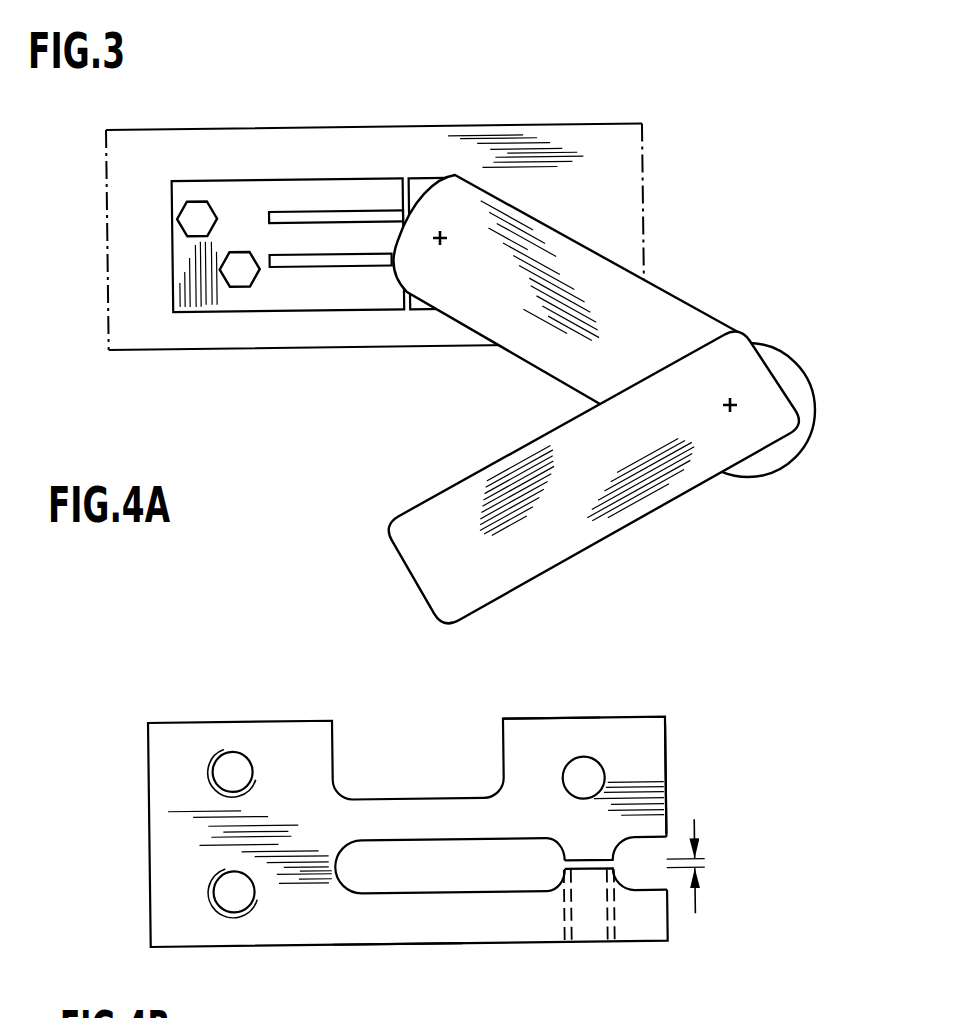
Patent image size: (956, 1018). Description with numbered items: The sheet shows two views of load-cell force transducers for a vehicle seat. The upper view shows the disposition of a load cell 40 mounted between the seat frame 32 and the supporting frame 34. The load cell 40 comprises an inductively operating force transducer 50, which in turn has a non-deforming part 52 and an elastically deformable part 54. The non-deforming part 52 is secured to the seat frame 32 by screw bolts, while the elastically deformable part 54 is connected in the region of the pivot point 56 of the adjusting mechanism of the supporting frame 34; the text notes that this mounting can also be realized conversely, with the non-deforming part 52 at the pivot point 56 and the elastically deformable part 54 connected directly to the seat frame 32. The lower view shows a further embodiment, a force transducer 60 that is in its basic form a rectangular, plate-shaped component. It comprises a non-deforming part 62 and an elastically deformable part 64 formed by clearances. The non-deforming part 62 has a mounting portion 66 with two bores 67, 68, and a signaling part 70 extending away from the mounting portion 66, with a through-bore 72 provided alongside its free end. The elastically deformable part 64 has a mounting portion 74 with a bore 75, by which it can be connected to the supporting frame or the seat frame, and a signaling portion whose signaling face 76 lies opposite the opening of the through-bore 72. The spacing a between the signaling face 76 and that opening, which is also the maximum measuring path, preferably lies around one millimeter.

In FIG. 3, the seat frame 32 is at (580, 150).
In FIG. 3, the supporting frame 34 is at (674, 516).
In FIG. 3, the load cell 40 is at (347, 176).
In FIG. 3, the force transducer 50 is at (303, 276).
In FIG. 3, the non-deforming part 52 is at (242, 176).
In FIG. 3, the elastically deformable part 54 is at (427, 176).
In FIG. 3, the pivot point 56 is at (442, 244).
In FIG. 4A, the force transducer 60 is at (195, 712).
In FIG. 4A, the non-deforming part 62 is at (397, 943).
In FIG. 4A, the elastically deformable part 64 is at (542, 715).
In FIG. 4A, the mounting portion 66 is at (186, 820).
In FIG. 4A, the bore 67 is at (238, 785).
In FIG. 4A, the bore 68 is at (226, 872).
In FIG. 4A, the signaling part 70 is at (473, 932).
In FIG. 4A, the through-bore 72 is at (579, 918).
In FIG. 4A, the mounting portion 74 is at (657, 748).
In FIG. 4A, the bore 75 is at (593, 783).
In FIG. 4A, the signaling face 76 is at (591, 857).
In FIG. 4A, the spacing a is at (693, 866).